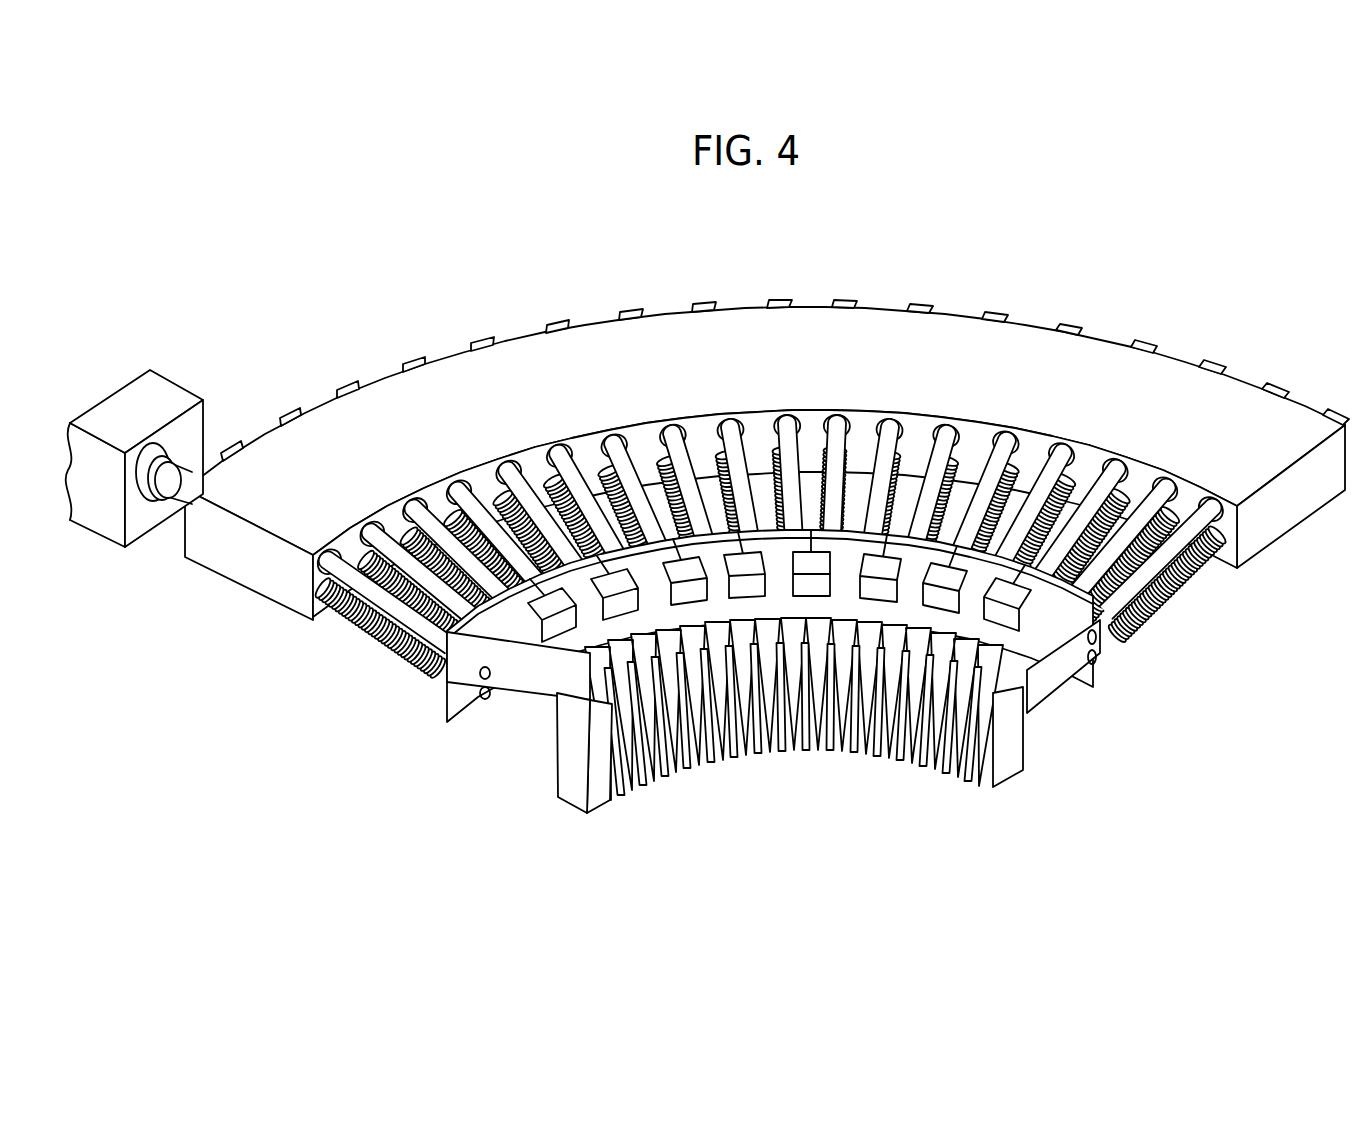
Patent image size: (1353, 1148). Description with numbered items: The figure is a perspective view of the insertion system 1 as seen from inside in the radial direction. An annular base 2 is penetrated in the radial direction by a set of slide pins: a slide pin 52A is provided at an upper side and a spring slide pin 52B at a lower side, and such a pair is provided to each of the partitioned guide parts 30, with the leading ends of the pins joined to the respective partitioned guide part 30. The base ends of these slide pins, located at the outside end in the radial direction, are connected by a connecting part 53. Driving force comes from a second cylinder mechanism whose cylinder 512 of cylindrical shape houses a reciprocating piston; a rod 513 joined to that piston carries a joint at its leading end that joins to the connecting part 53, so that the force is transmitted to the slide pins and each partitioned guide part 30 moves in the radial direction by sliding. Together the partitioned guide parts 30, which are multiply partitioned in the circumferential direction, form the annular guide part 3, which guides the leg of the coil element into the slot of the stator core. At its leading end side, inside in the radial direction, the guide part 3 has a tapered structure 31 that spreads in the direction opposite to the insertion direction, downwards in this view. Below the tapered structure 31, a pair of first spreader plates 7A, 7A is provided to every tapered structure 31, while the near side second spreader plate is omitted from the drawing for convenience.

The insertion system 1 is at (1170, 203).
The base 2 is at (767, 425).
The guide part 3 is at (773, 698).
The partitioned guide part 30 is at (505, 693).
The tapered structure 31 is at (606, 712).
The first spreader plate 7A is at (597, 800).
The cylinder 512 is at (138, 405).
The rod 513 is at (173, 484).
The connecting part 53 is at (238, 440).
The slide pin 52A is at (350, 577).
The spring slide pin 52B is at (408, 637).